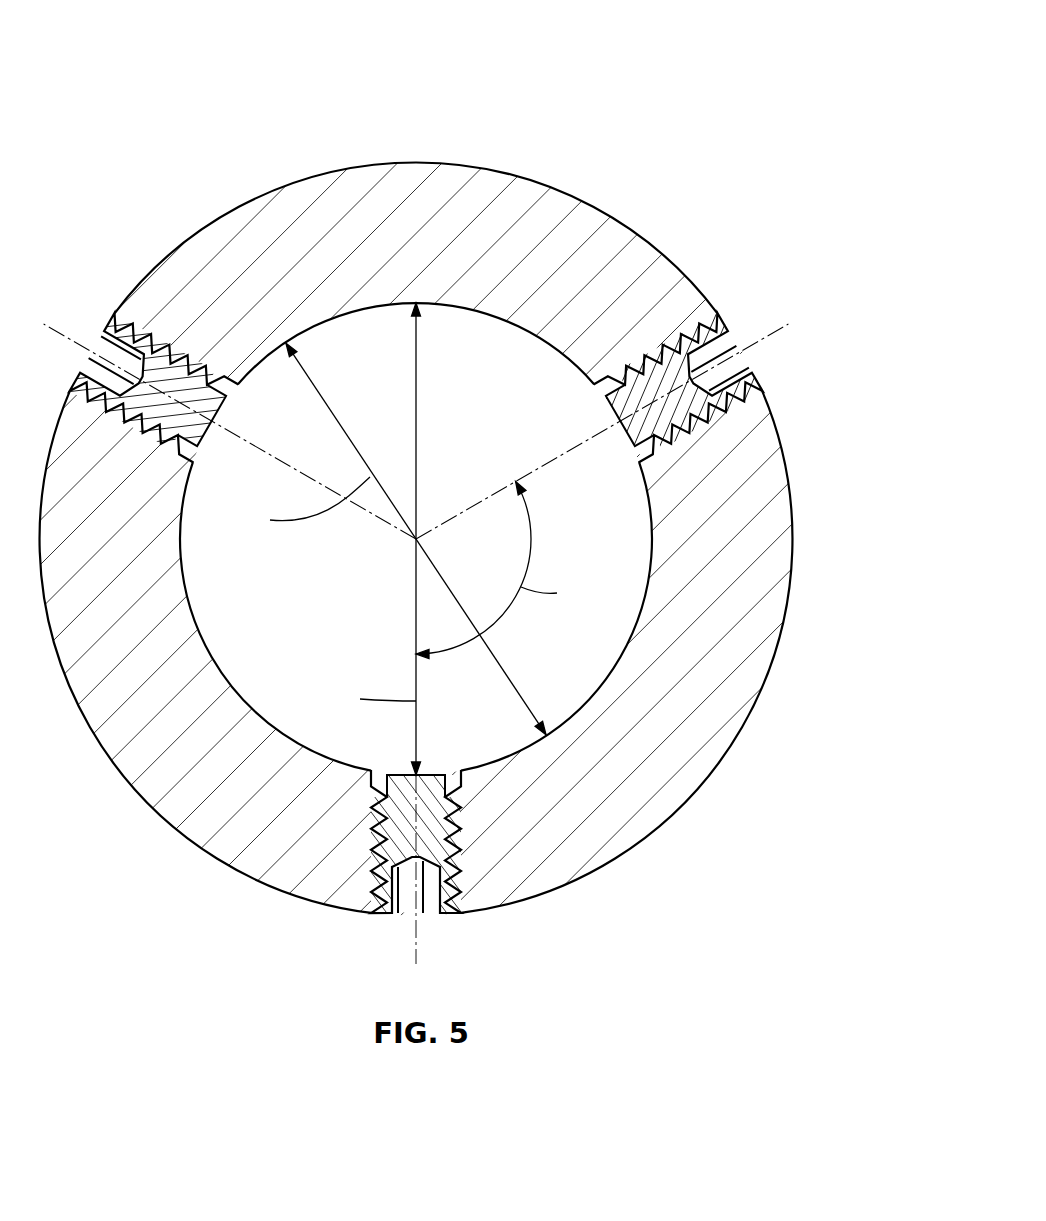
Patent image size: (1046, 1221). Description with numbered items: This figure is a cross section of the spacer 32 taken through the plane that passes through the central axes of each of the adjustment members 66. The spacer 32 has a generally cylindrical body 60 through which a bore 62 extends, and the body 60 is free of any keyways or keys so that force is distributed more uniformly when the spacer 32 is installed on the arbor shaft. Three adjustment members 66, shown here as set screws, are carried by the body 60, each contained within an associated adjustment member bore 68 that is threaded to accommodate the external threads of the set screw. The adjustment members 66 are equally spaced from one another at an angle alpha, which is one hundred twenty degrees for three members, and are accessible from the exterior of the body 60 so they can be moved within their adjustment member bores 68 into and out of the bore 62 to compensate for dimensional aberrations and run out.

The spacer 32 is at (627, 84).
The body 60 is at (333, 172).
The bore 62 is at (499, 316).
The adjustment member 66 is at (118, 332).
The adjustment member bore 68 is at (112, 322).